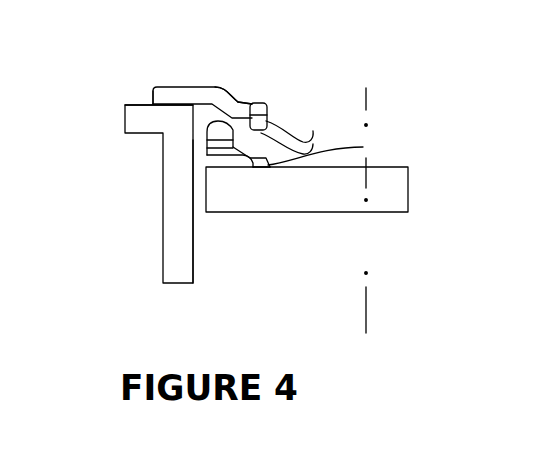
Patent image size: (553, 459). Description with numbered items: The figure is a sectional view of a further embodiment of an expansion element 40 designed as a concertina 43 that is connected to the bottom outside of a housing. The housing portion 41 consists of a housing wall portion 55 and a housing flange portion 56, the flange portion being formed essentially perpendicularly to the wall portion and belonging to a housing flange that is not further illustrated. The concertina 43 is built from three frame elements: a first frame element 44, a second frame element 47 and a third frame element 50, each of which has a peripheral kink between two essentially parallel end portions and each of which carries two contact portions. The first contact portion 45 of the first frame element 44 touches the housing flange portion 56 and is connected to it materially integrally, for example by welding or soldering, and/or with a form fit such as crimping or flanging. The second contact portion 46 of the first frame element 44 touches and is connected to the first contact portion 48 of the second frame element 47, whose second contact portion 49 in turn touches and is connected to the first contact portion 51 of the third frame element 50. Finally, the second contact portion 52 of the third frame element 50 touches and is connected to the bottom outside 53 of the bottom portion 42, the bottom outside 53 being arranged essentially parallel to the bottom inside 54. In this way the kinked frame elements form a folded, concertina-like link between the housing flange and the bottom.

The expansion element 40 is at (345, 86).
The housing portion 41 is at (180, 237).
The bottom portion 42 is at (380, 188).
The concertina 43 is at (276, 126).
The first frame element 44 is at (190, 101).
The first contact portion of the first frame element 45 is at (165, 101).
The second contact portion of the first frame element 46 is at (253, 111).
The second frame element 47 is at (298, 127).
The first contact portion of the second frame element 48 is at (290, 128).
The second contact portion of the second frame element 49 is at (223, 134).
The third frame element 50 is at (336, 146).
The first contact portion of the third frame element 51 is at (223, 146).
The second contact portion of the third frame element 52 is at (257, 167).
The bottom outside 53 is at (393, 165).
The bottom inside 54 is at (362, 213).
The housing wall portion 55 is at (180, 200).
The housing flange portion 56 is at (143, 117).